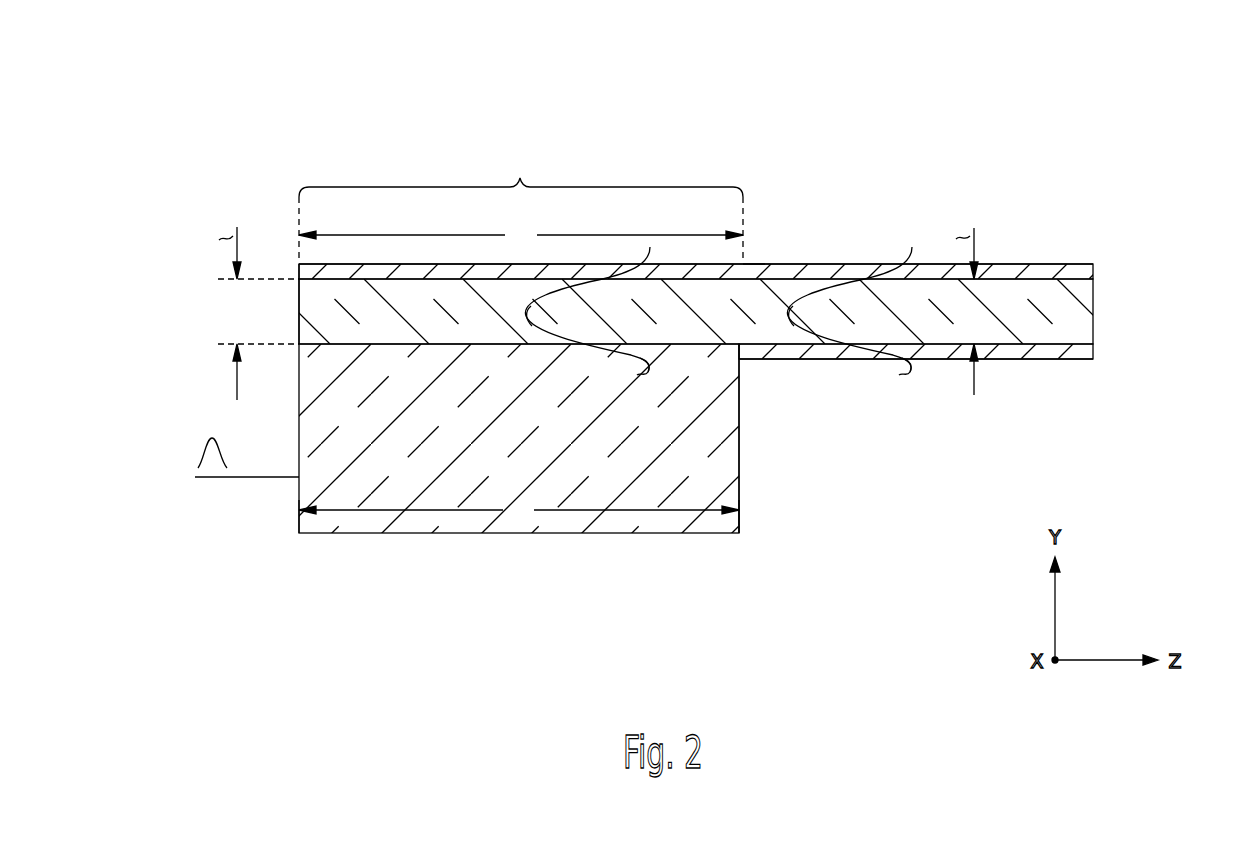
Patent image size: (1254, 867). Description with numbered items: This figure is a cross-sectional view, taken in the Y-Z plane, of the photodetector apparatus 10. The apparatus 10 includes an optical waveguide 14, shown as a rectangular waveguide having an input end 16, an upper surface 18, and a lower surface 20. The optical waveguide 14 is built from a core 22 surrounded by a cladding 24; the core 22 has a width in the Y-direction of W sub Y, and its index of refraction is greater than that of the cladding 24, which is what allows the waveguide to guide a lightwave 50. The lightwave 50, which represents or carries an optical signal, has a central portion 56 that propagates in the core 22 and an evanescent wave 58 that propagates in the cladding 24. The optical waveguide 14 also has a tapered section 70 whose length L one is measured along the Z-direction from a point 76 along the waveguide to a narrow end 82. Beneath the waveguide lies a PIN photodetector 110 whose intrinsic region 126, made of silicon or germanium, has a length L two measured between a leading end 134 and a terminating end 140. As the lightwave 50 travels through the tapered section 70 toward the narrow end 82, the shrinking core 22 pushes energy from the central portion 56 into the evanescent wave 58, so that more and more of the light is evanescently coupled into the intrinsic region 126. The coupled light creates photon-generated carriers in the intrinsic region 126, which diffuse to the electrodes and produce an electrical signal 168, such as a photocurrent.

The photodetector apparatus 10 is at (823, 68).
The optical waveguide 14 is at (1018, 190).
The input end 16 is at (1093, 308).
The upper surface 18 is at (998, 262).
The lower surface 20 is at (1070, 360).
The core 22 is at (1027, 340).
The cladding 24 is at (1053, 263).
The lightwave 50 is at (497, 296).
The central portion 56 is at (521, 333).
The evanescent wave 58 is at (648, 372).
The tapered section 70 is at (521, 205).
The point 76 is at (749, 262).
The narrow end 82 is at (296, 313).
The PIN photodetector 110 is at (570, 578).
The intrinsic region 126 is at (739, 444).
The leading end 134 is at (739, 522).
The terminating end 140 is at (299, 520).
The electrical signal 168 is at (201, 440).